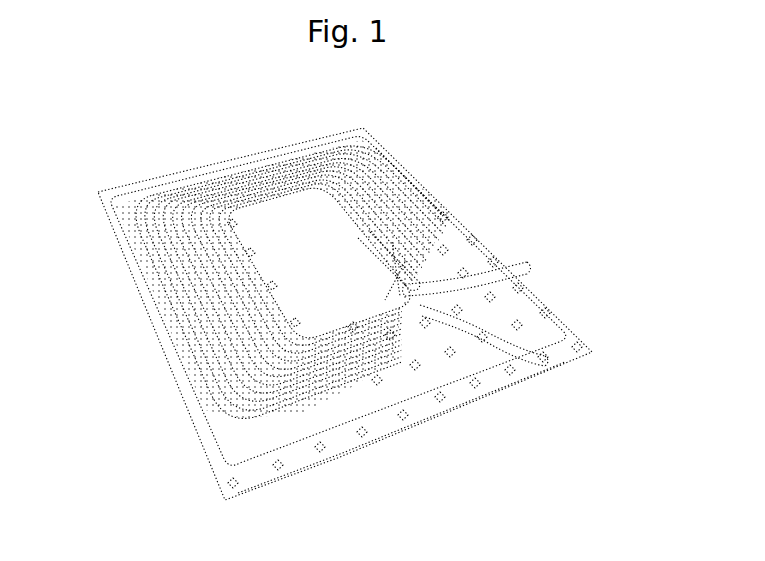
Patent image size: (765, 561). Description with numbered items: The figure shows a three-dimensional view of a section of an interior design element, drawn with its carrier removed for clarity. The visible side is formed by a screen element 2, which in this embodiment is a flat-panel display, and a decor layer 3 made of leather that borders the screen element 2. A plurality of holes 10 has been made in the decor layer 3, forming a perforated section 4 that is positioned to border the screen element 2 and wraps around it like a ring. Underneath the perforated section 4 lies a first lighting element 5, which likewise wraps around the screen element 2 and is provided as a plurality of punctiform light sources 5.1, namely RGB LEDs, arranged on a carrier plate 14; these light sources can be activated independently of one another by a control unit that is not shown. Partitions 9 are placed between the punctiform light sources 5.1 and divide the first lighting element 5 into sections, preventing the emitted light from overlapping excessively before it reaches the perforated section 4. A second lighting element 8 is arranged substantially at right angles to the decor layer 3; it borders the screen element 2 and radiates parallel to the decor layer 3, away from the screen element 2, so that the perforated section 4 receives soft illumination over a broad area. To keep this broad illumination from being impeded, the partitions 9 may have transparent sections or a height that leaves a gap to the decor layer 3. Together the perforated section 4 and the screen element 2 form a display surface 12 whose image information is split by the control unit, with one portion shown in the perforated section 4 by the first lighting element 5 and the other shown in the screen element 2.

The screen element 2 is at (290, 222).
The decor layer 3 is at (245, 433).
The perforated section 4 is at (383, 202).
The first lighting element 5 is at (392, 403).
The punctiform light sources 5.1 is at (440, 403).
The second lighting element 8 is at (418, 302).
The partitions 9 is at (487, 273).
The holes 10 is at (230, 292).
The display surface 12 is at (378, 268).
The carrier plate 14 is at (423, 413).